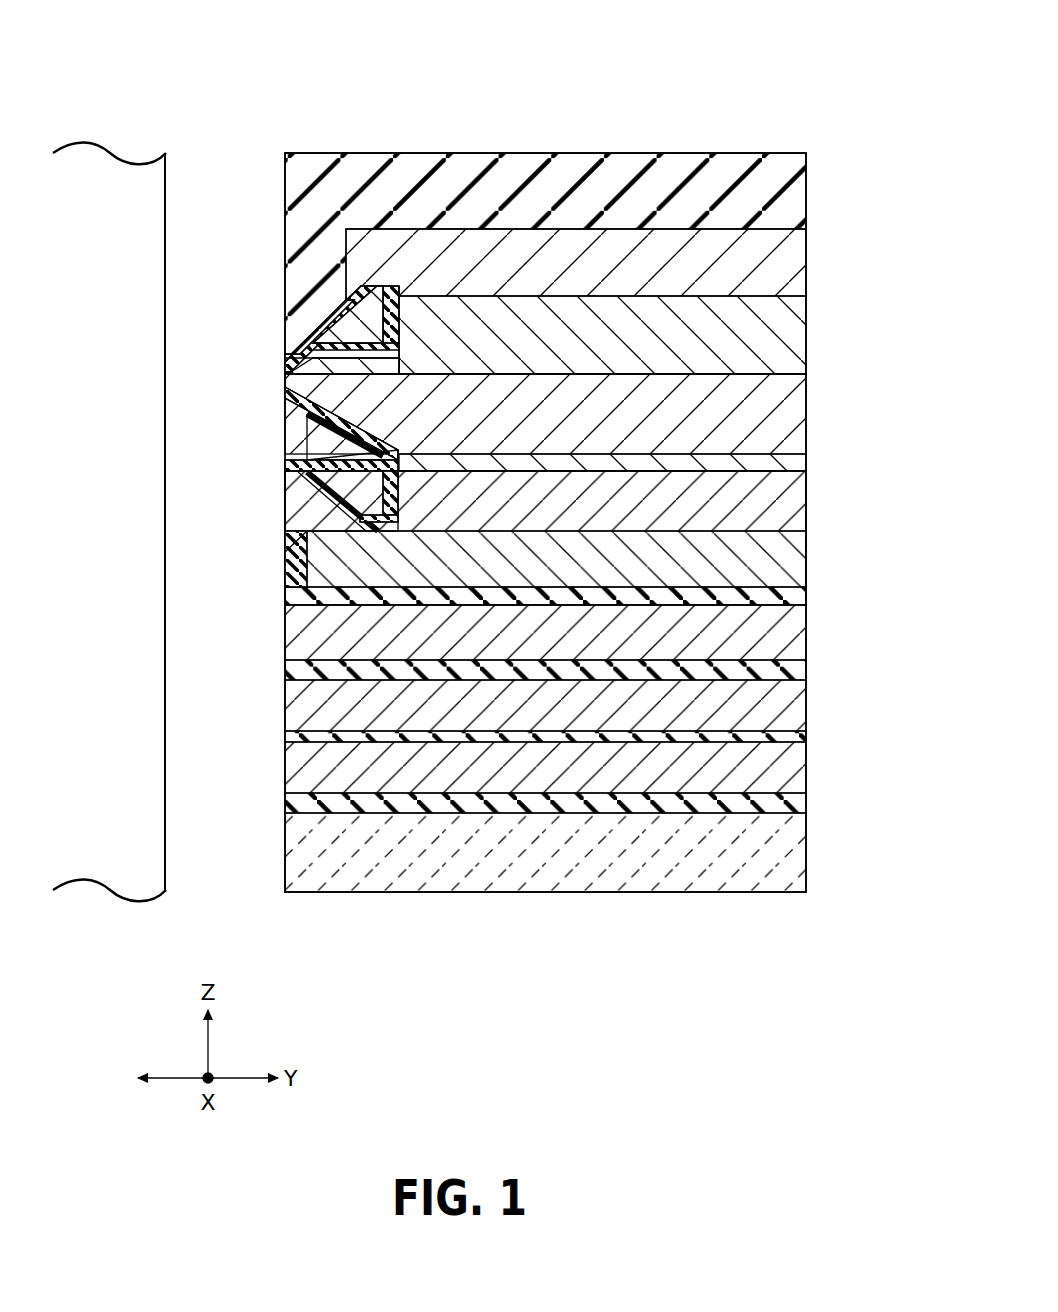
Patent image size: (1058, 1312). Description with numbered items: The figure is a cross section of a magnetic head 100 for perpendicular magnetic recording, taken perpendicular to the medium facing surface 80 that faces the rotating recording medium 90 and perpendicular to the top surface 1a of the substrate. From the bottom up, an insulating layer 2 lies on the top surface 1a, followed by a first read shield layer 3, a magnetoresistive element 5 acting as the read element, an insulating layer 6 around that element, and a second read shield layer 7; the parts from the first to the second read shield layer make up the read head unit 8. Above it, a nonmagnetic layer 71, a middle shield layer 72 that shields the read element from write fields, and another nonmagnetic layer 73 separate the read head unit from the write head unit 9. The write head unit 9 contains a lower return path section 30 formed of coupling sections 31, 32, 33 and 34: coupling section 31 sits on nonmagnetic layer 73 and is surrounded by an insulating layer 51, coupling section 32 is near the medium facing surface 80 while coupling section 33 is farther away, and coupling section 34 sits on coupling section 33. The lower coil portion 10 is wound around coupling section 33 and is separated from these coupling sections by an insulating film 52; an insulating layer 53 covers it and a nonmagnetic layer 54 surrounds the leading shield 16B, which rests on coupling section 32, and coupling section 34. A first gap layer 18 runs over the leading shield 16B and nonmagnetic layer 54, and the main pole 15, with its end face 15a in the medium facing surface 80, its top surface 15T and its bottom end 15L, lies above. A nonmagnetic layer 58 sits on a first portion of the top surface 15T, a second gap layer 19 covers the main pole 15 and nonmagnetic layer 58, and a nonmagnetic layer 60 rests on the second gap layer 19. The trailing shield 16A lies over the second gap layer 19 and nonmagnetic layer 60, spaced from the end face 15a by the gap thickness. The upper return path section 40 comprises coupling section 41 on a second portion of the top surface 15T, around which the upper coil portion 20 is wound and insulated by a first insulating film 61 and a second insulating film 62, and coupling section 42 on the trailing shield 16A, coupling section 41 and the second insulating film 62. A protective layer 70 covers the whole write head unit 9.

The magnetic head 100 is at (546, 80).
The recording medium 90 is at (102, 160).
The medium facing surface 80 is at (282, 188).
The protective layer 70 is at (800, 194).
The upper return path section 40 is at (612, 230).
The coupling section 42 is at (800, 266).
The coupling section 41 is at (800, 337).
The top surface 15T is at (800, 372).
The main pole 15 is at (800, 416).
The coupling section 34 is at (800, 461).
The bottom end 15L is at (775, 478).
The coupling section 33 is at (800, 529).
The coupling section 31 is at (800, 559).
The nonmagnetic layer 73 is at (800, 594).
The middle shield layer 72 is at (800, 631).
The nonmagnetic layer 71 is at (800, 672).
The lower return path section 30 is at (706, 594).
The read head unit 8 is at (545, 736).
The second read shield layer 7 is at (800, 709).
The insulating layer 6 is at (800, 739).
The magnetoresistive element 5 is at (545, 767).
The first read shield layer 3 is at (800, 769).
The top surface 1a is at (800, 801).
The insulating layer 2 is at (800, 810).
The write head unit 9 is at (329, 341).
The nonmagnetic layer 60 is at (314, 228).
The second insulating film 62 is at (348, 298).
The first insulating film 61 is at (390, 330).
The upper coil portion 20 is at (378, 303).
The trailing shield 16A is at (330, 320).
The nonmagnetic layer 58 is at (405, 368).
The second gap layer 19 is at (295, 358).
The end face 15a is at (290, 372).
The first gap layer 18 is at (287, 388).
The leading shield 16B is at (325, 420).
The nonmagnetic layer 54 is at (355, 445).
The insulating layer 53 is at (330, 465).
The lower coil portion 10 is at (355, 498).
The coupling section 32 is at (300, 518).
The insulating film 52 is at (259, 550).
The insulating layer 51 is at (295, 578).